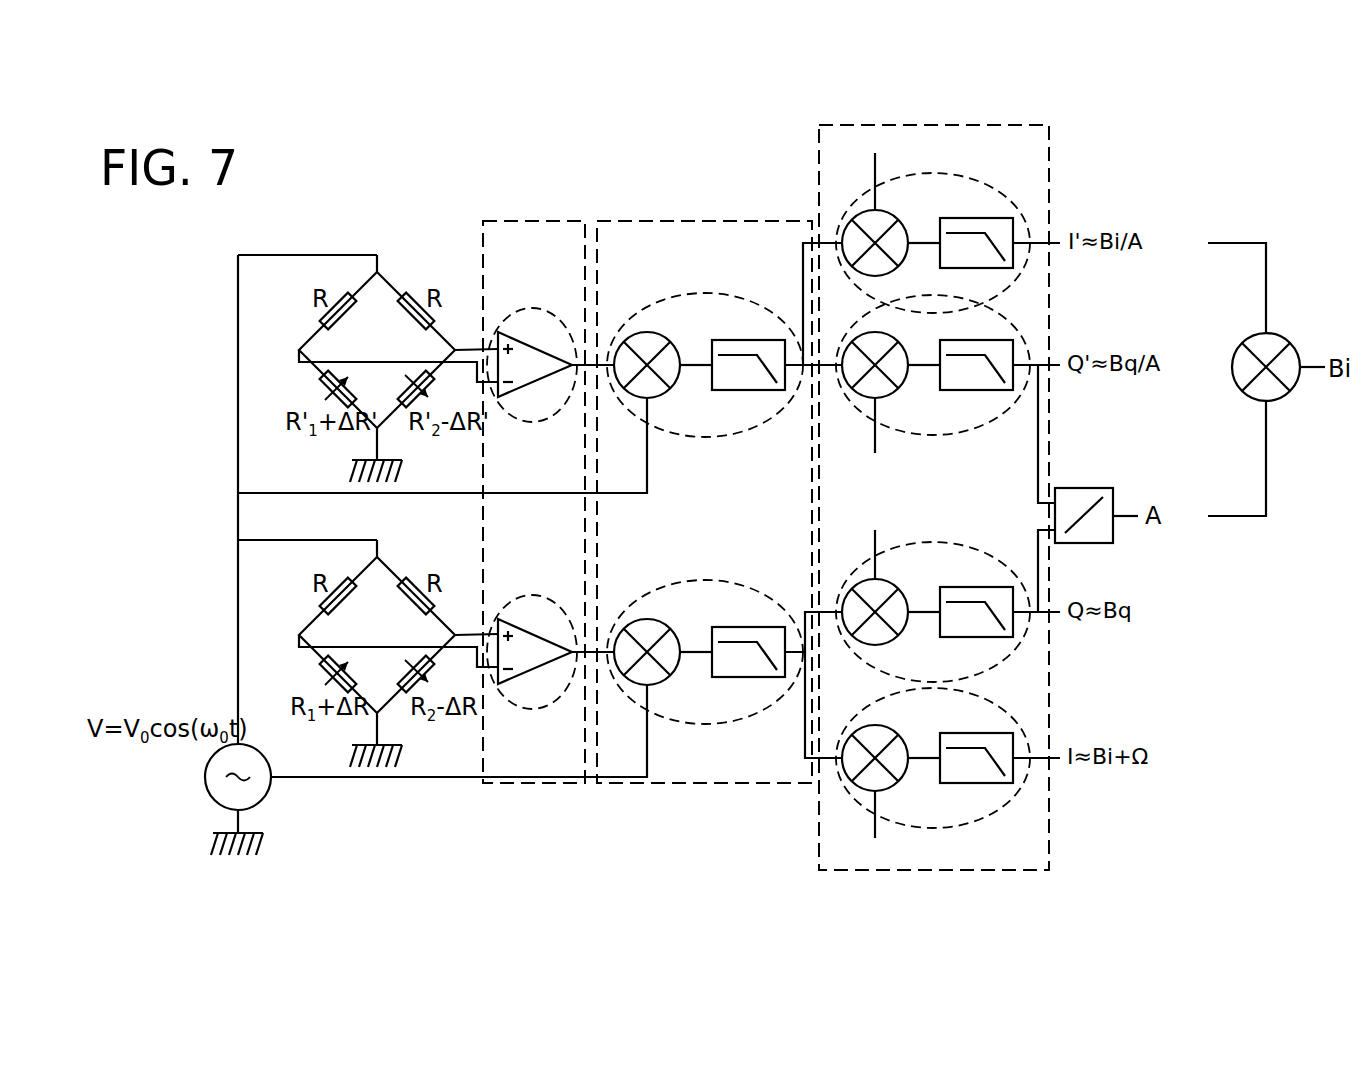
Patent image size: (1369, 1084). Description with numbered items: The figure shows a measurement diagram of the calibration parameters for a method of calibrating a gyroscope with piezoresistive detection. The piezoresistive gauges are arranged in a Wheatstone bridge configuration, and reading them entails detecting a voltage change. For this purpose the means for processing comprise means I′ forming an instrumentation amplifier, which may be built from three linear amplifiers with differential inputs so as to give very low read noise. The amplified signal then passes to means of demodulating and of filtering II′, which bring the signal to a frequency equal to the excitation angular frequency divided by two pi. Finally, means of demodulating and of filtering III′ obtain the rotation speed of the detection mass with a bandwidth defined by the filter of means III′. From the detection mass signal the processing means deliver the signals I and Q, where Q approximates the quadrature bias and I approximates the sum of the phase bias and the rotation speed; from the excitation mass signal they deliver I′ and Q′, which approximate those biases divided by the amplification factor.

The means forming an instrumentation amplifier I′ is at (472, 243).
The means of demodulating and of filtering II′ is at (660, 213).
The means of demodulating and of filtering III′ is at (1068, 152).